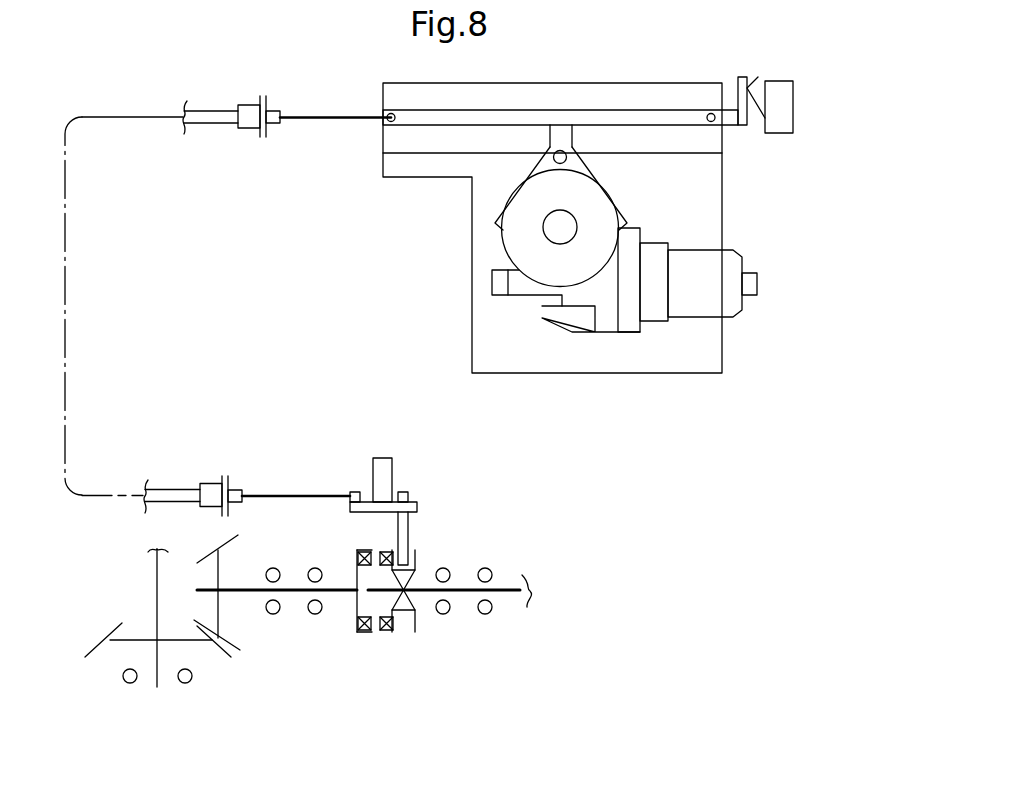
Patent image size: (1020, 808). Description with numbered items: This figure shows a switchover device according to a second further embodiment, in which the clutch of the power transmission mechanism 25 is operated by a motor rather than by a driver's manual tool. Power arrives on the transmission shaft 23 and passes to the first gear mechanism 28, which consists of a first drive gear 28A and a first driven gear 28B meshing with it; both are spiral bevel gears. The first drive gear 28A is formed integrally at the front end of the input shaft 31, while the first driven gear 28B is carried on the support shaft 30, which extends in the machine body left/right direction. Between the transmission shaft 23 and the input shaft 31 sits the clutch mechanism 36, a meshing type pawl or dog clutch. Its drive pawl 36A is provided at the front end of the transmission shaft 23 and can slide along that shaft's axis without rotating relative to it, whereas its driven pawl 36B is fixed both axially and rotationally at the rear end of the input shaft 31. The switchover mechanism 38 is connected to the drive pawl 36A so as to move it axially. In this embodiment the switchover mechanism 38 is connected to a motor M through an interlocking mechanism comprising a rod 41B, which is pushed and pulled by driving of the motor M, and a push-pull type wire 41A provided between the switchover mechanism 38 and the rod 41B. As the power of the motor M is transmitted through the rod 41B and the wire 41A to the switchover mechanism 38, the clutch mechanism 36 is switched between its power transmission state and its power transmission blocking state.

The wire 41A is at (317, 118).
The rod 41B is at (655, 126).
The motor M is at (697, 308).
The power transmission mechanism 25 is at (251, 553).
The switchover mechanism 38 is at (417, 505).
The transmission shaft 23 is at (503, 590).
The first gear mechanism 28 is at (128, 583).
The first drive gear 28A is at (217, 575).
The first driven gear 28B is at (157, 623).
The support shaft 30 is at (157, 655).
The input shaft 31 is at (297, 593).
The clutch mechanism 36 is at (388, 641).
The drive pawl 36A is at (410, 622).
The driven pawl 36B is at (363, 632).